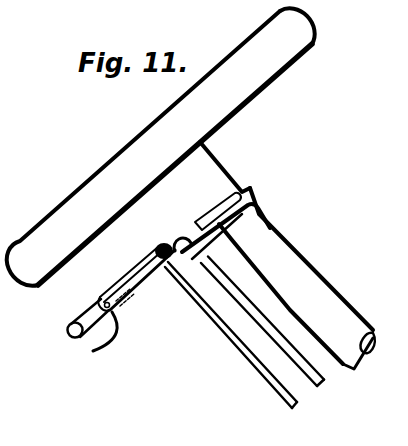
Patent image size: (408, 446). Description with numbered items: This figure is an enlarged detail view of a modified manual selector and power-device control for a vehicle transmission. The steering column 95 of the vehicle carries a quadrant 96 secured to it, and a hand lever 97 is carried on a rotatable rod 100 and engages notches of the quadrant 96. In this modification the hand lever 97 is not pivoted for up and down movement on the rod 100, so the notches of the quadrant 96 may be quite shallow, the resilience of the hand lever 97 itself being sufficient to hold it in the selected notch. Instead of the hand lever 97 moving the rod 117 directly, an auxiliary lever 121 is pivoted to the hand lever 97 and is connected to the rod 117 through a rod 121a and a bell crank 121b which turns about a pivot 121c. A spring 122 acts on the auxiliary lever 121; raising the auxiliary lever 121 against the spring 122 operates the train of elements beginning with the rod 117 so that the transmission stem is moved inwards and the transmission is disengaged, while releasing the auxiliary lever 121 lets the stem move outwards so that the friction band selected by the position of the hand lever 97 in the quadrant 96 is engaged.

The steering column 95 is at (277, 263).
The quadrant 96 is at (198, 262).
The hand lever 97 is at (68, 329).
The rotatable rod 100 is at (249, 314).
The rod 117 is at (268, 380).
The auxiliary lever 121 is at (102, 350).
The rod 121a is at (118, 272).
The bell crank 121b is at (163, 245).
The pivot 121c is at (197, 204).
The spring 122 is at (173, 262).